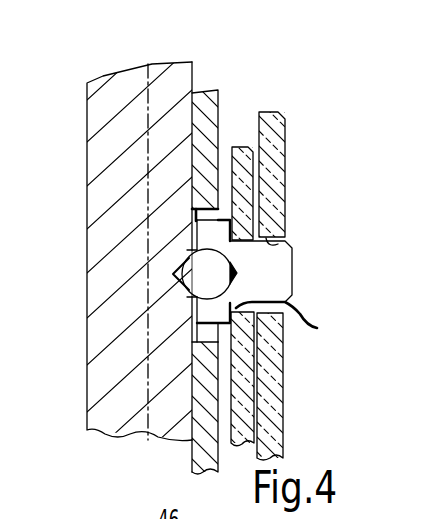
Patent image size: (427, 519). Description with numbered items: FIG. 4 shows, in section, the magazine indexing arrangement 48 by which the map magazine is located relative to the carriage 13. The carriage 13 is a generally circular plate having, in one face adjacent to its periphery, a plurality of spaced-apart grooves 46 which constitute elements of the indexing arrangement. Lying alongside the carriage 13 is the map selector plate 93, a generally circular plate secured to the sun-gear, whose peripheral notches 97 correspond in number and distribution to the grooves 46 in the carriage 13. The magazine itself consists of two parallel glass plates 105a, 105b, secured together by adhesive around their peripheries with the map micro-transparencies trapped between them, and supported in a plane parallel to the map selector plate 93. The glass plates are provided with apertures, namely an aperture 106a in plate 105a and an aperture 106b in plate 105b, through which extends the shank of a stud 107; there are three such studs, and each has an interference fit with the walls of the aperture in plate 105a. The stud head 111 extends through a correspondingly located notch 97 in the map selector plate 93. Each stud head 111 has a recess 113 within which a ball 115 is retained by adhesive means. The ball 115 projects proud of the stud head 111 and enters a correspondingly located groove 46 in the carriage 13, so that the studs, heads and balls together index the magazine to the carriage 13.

The carriage 13 is at (100, 90).
The grooves 46 is at (174, 274).
The magazine indexing arrangement 48 is at (186, 321).
The map selector plate 93 is at (196, 455).
The peripheral notches 97 is at (216, 215).
The glass plate 105a is at (242, 146).
The glass plate 105b is at (348, 191).
The aperture 106a is at (296, 323).
The aperture 106b is at (282, 241).
The stud 107 is at (278, 258).
The stud head 111 is at (205, 239).
The recess 113 is at (192, 298).
The ball 115 is at (225, 277).